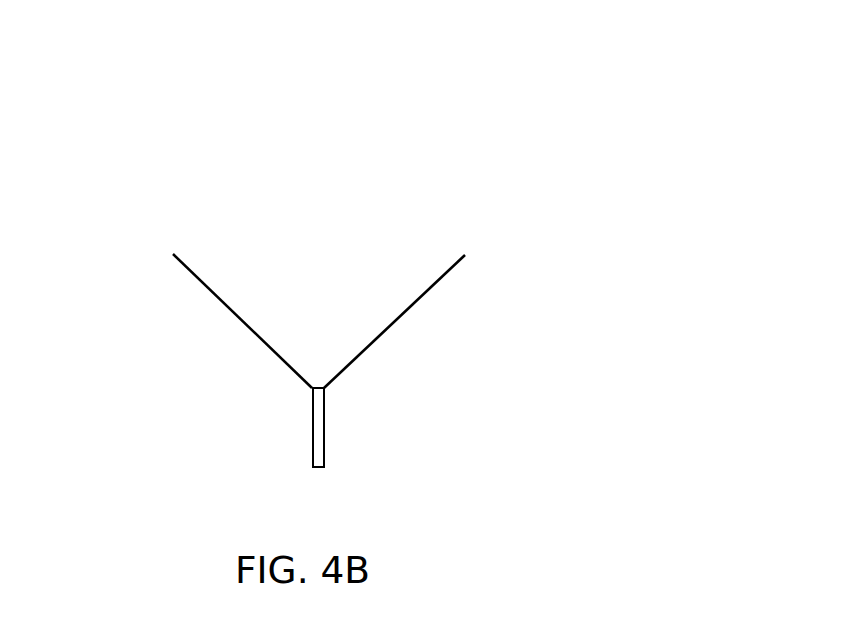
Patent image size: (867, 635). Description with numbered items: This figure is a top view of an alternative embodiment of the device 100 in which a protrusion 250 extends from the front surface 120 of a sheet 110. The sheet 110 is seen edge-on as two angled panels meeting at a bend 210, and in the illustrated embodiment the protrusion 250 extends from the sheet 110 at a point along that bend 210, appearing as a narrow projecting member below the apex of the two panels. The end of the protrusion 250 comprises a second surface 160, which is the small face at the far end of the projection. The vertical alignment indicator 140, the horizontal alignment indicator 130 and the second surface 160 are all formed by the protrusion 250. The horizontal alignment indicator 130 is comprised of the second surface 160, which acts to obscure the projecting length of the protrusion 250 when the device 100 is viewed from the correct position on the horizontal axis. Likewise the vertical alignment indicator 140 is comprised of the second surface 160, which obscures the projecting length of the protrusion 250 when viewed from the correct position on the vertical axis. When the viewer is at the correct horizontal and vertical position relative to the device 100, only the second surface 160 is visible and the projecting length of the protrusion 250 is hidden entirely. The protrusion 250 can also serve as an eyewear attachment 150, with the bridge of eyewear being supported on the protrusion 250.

The device 100 is at (608, 198).
The sheet 110 is at (183, 263).
The front surface 120 is at (232, 313).
The horizontal alignment indicator 130 is at (313, 467).
The vertical alignment indicator 140 is at (317, 468).
The eyewear attachment 150 is at (313, 425).
The second surface 160 is at (317, 468).
The bend 210 is at (325, 390).
The protrusion 250 is at (350, 423).